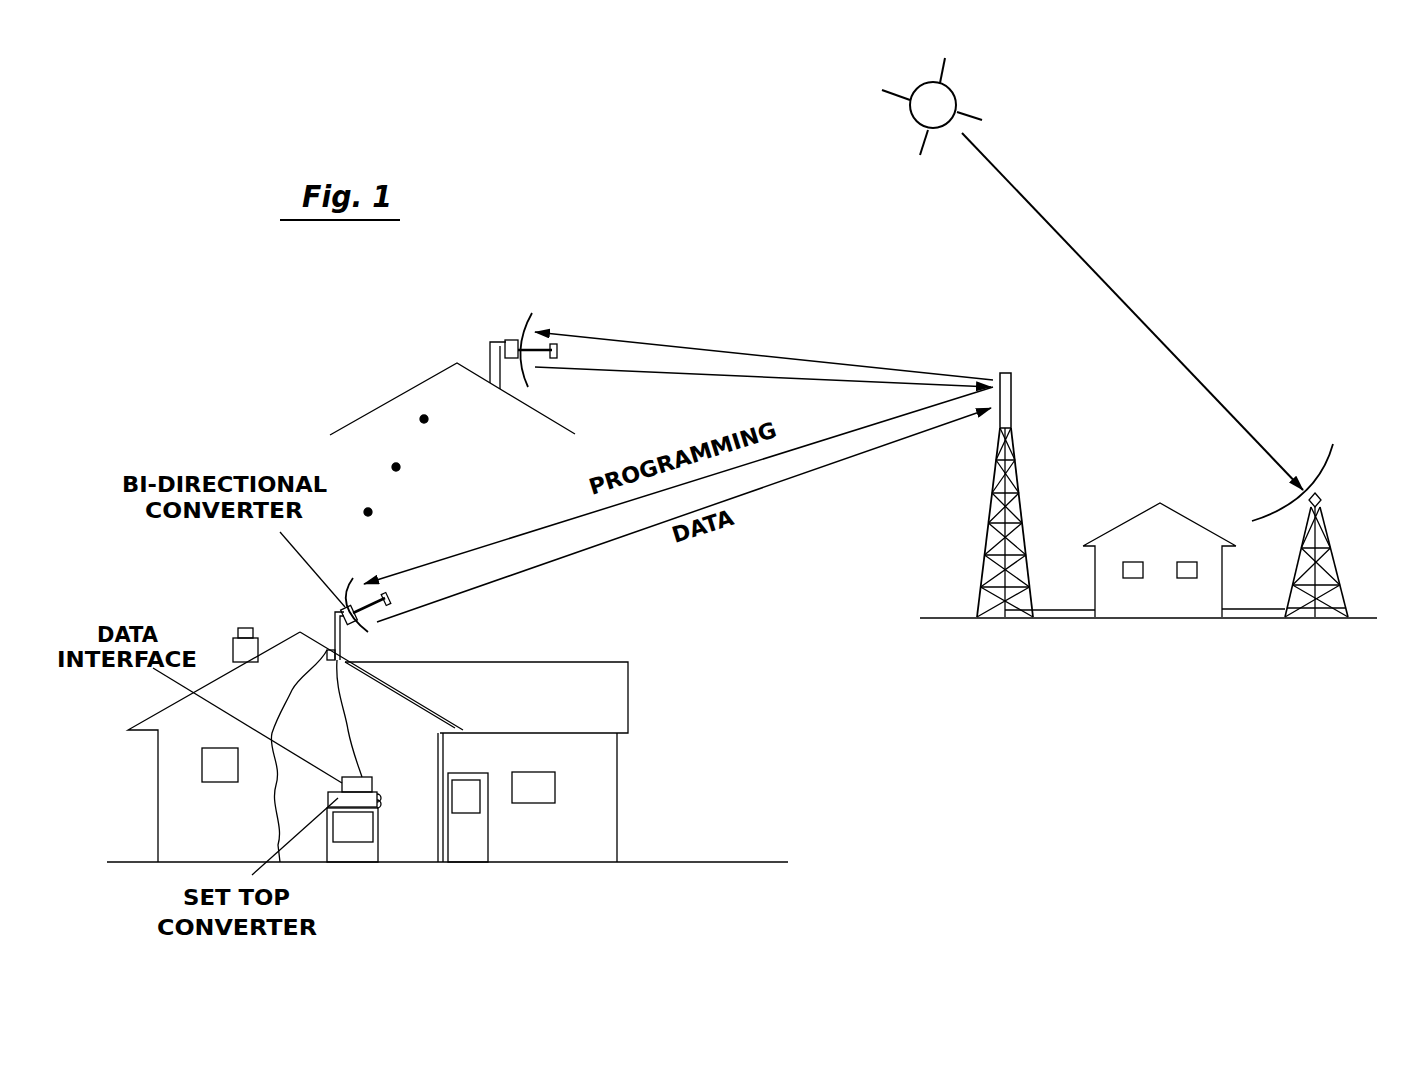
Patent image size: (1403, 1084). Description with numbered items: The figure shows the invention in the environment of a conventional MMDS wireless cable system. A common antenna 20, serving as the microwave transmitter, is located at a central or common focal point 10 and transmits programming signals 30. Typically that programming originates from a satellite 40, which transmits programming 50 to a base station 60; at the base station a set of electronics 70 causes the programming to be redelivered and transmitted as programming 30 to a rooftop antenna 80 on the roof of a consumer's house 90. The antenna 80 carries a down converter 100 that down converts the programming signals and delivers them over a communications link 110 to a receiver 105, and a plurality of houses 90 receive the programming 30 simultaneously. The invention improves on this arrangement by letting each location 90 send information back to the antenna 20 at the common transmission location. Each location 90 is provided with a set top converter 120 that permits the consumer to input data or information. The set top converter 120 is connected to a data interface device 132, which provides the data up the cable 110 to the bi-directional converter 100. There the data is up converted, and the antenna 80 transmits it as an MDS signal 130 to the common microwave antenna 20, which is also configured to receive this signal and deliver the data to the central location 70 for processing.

The central focal point 10 is at (1030, 472).
The common antenna 20 is at (1012, 396).
The programming signals 30 is at (750, 353).
The satellite 40 is at (965, 93).
The programming 50 is at (1078, 250).
The base station 60 is at (1329, 484).
The set of electronics 70 is at (1133, 607).
The rooftop antenna 80 is at (487, 335).
The consumer's house 90 is at (395, 393).
The bi-directional converter 100 is at (513, 340).
The receiver 105 is at (357, 848).
The communications link 110 is at (360, 750).
The set top converter 120 is at (328, 798).
The MDS signal 130 is at (677, 373).
The data interface device 132 is at (340, 784).